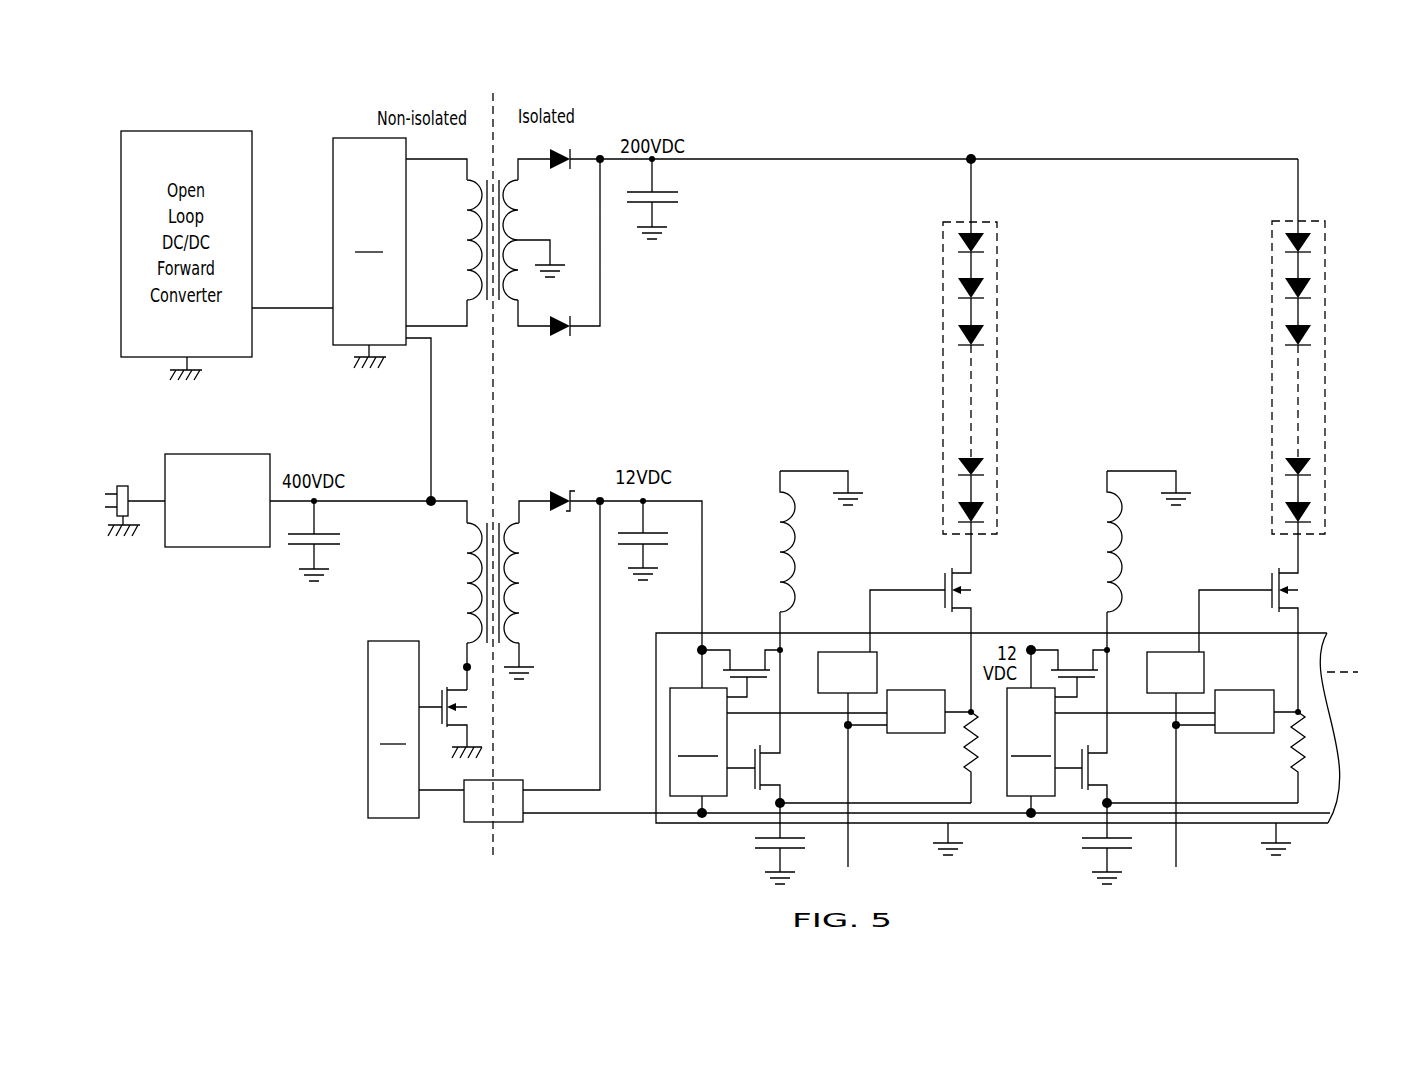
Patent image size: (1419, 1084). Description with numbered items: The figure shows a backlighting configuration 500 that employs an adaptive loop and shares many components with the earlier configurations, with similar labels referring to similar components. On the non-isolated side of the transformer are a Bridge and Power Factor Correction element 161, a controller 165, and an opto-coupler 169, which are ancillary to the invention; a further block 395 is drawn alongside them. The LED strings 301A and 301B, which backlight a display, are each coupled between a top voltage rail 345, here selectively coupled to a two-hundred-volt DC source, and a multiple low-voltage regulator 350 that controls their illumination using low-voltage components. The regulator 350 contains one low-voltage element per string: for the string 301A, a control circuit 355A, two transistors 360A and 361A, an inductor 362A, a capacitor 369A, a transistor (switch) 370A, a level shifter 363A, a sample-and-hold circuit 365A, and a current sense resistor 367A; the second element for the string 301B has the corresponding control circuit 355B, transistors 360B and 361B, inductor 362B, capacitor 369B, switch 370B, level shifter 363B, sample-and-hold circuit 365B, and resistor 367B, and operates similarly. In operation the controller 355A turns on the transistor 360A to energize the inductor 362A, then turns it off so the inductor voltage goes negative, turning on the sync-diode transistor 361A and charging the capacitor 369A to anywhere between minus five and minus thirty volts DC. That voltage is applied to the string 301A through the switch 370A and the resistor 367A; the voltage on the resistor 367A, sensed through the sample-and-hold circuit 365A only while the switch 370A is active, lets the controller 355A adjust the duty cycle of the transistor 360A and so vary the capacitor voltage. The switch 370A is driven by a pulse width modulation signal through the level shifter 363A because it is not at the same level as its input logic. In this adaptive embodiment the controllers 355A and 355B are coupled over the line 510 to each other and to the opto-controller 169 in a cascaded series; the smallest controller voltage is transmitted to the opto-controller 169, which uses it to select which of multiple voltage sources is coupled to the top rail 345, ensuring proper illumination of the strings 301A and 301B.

The backlighting configuration 500 is at (908, 120).
The top voltage rail 345 is at (1200, 158).
The PWM controller 395 is at (369, 253).
The Bridge and Power Factor Correction element 161 is at (247, 454).
The controller 165 is at (425, 729).
The opto-coupler 169 is at (505, 822).
The line 510 is at (588, 815).
The multiple low-voltage regulator 350 is at (1330, 722).
The LED string 301A is at (997, 490).
The LED string 301B is at (1325, 490).
The inductor 362A is at (796, 572).
The inductor 362B is at (1122, 572).
The transistor (switch) 370A is at (992, 590).
The transistor (switch) 370B is at (1319, 590).
The transistor 360A is at (748, 658).
The transistor 360B is at (1076, 658).
The control circuit 355A is at (698, 734).
The control circuit 355B is at (1031, 734).
The transistor (sync diode) 361A is at (770, 763).
The transistor (sync diode) 361B is at (1097, 763).
The level shifter 363A is at (831, 694).
The level shifter 363B is at (1159, 694).
The sample-and-hold circuit 365A is at (912, 690).
The sample-and-hold circuit 365B is at (1243, 690).
The current sense resistor 367A is at (950, 747).
The current sense resistor 367B is at (1278, 747).
The capacitor 369A is at (752, 842).
The capacitor 369B is at (1080, 842).